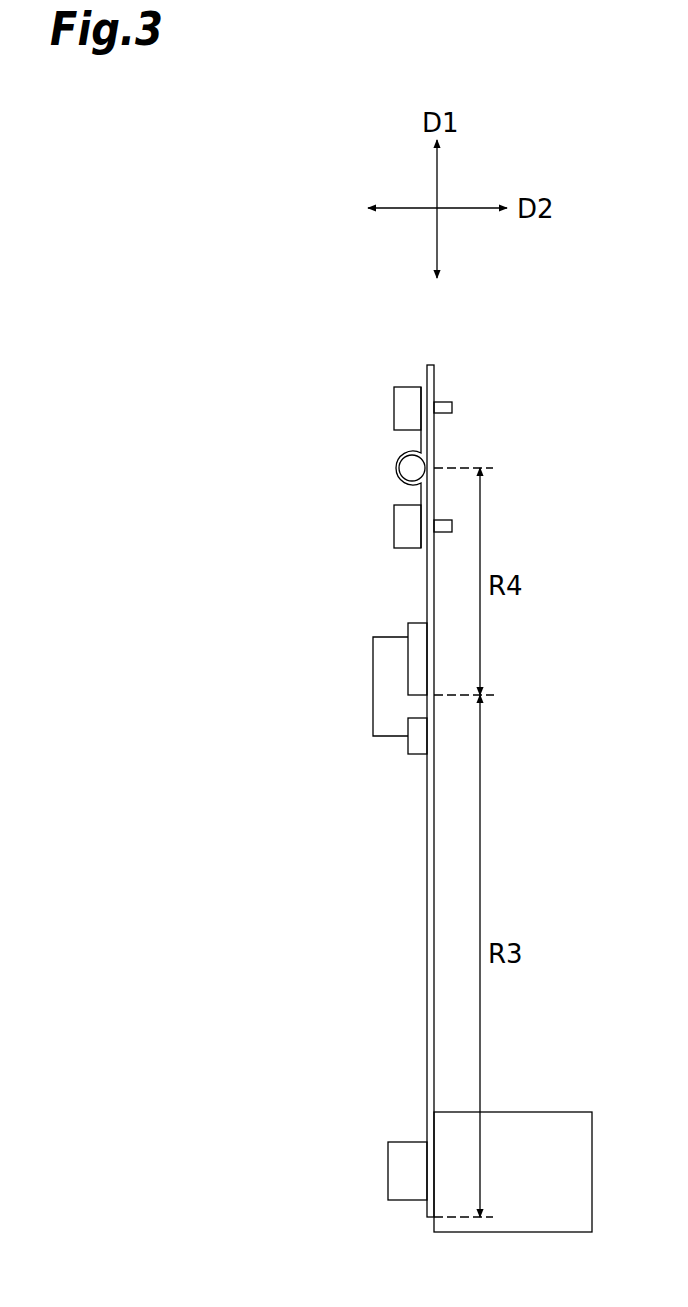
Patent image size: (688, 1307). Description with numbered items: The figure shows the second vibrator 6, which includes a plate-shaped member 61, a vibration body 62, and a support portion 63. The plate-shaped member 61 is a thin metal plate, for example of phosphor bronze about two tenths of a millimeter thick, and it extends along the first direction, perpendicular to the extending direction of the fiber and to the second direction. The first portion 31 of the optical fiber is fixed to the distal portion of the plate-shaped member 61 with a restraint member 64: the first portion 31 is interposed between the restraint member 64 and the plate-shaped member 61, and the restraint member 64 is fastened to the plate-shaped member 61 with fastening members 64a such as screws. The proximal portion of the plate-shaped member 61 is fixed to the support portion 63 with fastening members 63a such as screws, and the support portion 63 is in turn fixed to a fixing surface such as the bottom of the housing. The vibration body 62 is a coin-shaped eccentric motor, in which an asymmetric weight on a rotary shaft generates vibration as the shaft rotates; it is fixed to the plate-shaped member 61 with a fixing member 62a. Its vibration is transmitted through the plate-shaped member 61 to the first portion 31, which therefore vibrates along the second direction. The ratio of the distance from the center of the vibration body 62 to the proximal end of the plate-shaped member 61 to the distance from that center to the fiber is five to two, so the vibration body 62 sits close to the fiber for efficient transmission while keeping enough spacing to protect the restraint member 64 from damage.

The second vibrator 6 is at (252, 652).
The plate-shaped member 61 is at (427, 915).
The vibration body 62 is at (373, 688).
The fixing member 62a is at (408, 740).
The support portion 63 is at (558, 1112).
The fastening member 63a is at (388, 1175).
The restraint member 64 is at (421, 441).
The fastening member 64a is at (394, 402).
The first portion 31 is at (412, 468).